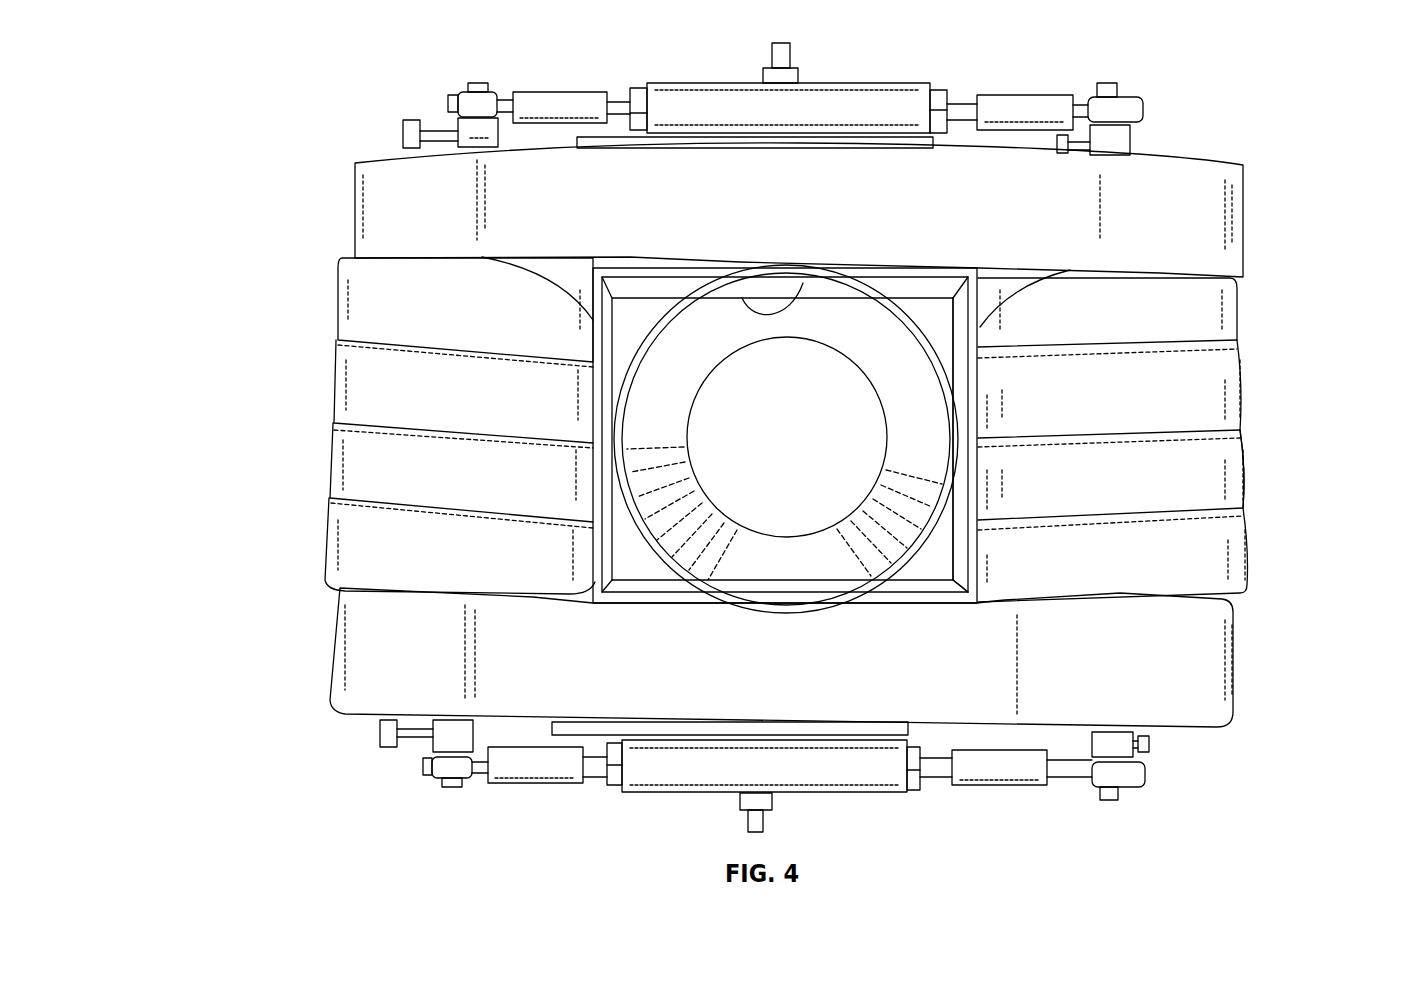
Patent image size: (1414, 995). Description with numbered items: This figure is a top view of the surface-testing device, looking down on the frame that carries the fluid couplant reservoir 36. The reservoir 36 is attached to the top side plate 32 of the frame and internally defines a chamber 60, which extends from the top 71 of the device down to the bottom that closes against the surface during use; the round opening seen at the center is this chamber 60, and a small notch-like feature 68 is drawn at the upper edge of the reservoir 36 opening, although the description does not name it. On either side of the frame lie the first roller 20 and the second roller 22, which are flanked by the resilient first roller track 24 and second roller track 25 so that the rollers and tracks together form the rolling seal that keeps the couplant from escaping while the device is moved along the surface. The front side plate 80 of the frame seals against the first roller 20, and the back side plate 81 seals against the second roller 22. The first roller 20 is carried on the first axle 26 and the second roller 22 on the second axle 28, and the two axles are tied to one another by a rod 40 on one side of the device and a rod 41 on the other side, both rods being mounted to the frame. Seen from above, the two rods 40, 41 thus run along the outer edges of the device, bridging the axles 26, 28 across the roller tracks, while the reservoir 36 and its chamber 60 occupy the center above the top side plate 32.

The first roller 20 is at (333, 405).
The second roller 22 is at (1245, 325).
The first roller track 24 is at (345, 640).
The second roller track 25 is at (1245, 215).
The first axle 26 is at (470, 133).
The second axle 28 is at (1115, 147).
The top side plate 32 is at (937, 573).
The reservoir 36 is at (902, 308).
The rod 40 is at (880, 775).
The rod 41 is at (855, 100).
The chamber 60 is at (820, 428).
The notch 68 is at (742, 298).
The top 71 is at (1310, 525).
The front side plate 80 is at (598, 462).
The back side plate 81 is at (981, 340).